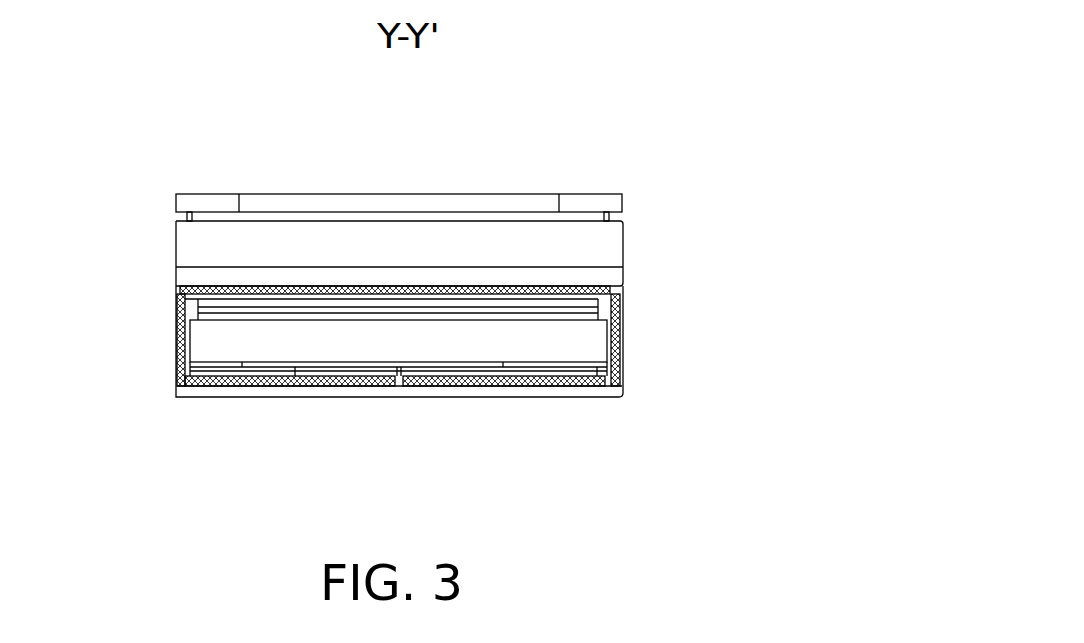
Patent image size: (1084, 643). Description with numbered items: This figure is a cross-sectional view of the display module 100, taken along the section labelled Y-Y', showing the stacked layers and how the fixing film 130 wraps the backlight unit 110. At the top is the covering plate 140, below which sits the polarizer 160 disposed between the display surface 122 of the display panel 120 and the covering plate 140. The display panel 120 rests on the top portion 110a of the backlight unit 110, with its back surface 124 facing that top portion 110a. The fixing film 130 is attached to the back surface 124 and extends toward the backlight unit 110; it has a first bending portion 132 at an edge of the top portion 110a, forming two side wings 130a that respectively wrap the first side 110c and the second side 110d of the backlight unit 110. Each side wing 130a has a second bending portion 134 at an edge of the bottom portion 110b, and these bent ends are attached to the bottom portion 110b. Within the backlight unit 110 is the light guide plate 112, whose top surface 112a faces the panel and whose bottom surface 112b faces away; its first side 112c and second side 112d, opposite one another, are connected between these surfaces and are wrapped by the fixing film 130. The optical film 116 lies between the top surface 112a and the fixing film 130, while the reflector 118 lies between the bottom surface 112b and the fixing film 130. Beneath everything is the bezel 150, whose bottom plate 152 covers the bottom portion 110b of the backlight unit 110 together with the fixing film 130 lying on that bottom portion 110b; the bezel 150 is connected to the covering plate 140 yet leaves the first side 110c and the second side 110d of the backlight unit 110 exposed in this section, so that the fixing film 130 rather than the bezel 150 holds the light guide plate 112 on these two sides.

The display module 100 is at (785, 555).
The backlight unit 110 is at (663, 460).
The top portion 110a is at (205, 294).
The bottom portion 110b is at (353, 375).
The first side 110c is at (186, 353).
The second side 110d is at (624, 326).
The light guide plate 112 is at (320, 355).
The top surface 112a is at (212, 315).
The bottom surface 112b is at (417, 367).
The first side 112c is at (186, 384).
The second side 112d is at (623, 357).
The optical film 116 is at (567, 303).
The reflector 118 is at (477, 369).
The display panel 120 is at (624, 257).
The display surface 122 is at (308, 217).
The back surface 124 is at (493, 291).
The fixing film 130 is at (186, 336).
The side wings 130a is at (176, 322).
The first bending portion 132 is at (176, 291).
The second bending portion 134 is at (180, 392).
The covering plate 140 is at (263, 205).
The bezel 150 is at (220, 403).
The bottom plate 152 is at (262, 390).
The polarizer 160 is at (472, 219).